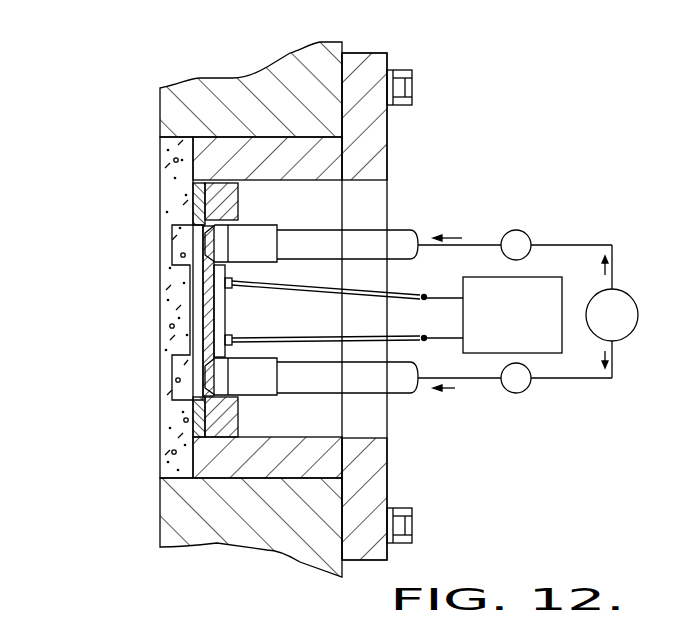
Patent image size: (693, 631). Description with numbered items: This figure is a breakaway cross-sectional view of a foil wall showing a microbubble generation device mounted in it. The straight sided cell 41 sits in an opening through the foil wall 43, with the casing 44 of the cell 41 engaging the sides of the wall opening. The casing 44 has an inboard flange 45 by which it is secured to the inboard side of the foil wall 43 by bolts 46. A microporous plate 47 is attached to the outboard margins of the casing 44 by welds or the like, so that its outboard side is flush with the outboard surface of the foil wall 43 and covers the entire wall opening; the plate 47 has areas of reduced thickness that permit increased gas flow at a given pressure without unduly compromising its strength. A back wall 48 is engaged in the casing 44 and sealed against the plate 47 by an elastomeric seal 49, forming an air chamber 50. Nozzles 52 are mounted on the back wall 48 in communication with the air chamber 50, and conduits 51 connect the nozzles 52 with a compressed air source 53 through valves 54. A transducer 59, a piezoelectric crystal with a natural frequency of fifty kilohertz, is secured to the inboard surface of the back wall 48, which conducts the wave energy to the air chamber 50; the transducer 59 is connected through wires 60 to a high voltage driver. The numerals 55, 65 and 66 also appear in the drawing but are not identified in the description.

The straight sided cell 41 is at (130, 320).
The foil wall 43 is at (160, 113).
The casing 44 is at (288, 183).
The inboard flange 45 is at (387, 147).
The bolts 46 is at (412, 88).
The microporous plate 47 is at (160, 207).
The back wall 48 is at (238, 200).
The elastomeric seal 49 is at (193, 186).
The air chamber 50 is at (192, 259).
The conduits 51 is at (266, 262).
The nozzles 52 is at (320, 259).
The compressed air source 53 is at (632, 300).
The valves 54 is at (511, 232).
The electrode face 55 is at (160, 248).
The transducer 59 is at (225, 313).
The wires 60 is at (374, 294).
The element 65 is at (260, 619).
The element 66 is at (216, 619).